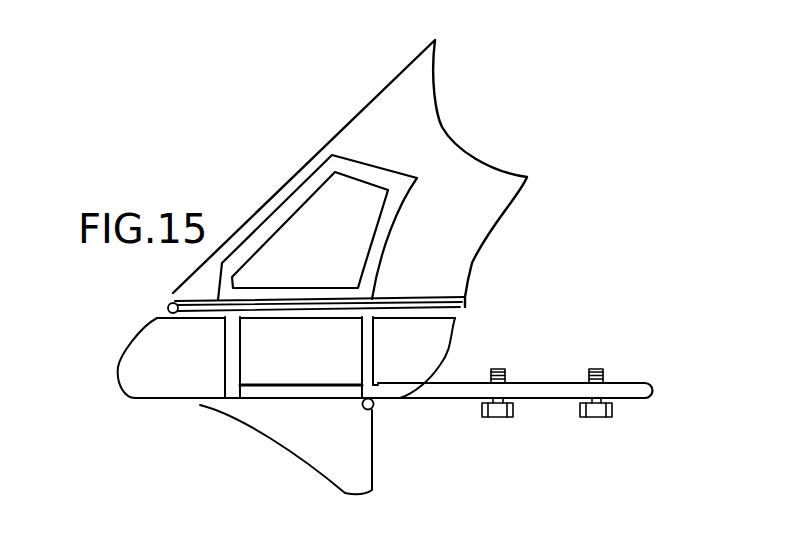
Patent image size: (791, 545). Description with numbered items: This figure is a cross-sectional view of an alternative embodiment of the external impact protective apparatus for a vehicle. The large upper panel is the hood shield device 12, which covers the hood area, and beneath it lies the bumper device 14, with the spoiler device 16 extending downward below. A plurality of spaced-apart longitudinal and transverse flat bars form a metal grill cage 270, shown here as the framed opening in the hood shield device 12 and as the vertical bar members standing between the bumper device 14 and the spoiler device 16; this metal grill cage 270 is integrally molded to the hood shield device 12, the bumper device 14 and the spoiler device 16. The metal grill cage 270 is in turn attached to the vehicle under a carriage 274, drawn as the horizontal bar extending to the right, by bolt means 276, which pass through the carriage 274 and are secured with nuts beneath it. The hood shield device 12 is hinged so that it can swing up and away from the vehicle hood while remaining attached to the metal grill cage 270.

The hood shield device 12 is at (440, 127).
The bumper device 14 is at (138, 348).
The spoiler device 16 is at (358, 463).
The metal grill cage 270 is at (297, 200).
The carriage 274 is at (538, 383).
The bolt means 276 is at (597, 417).